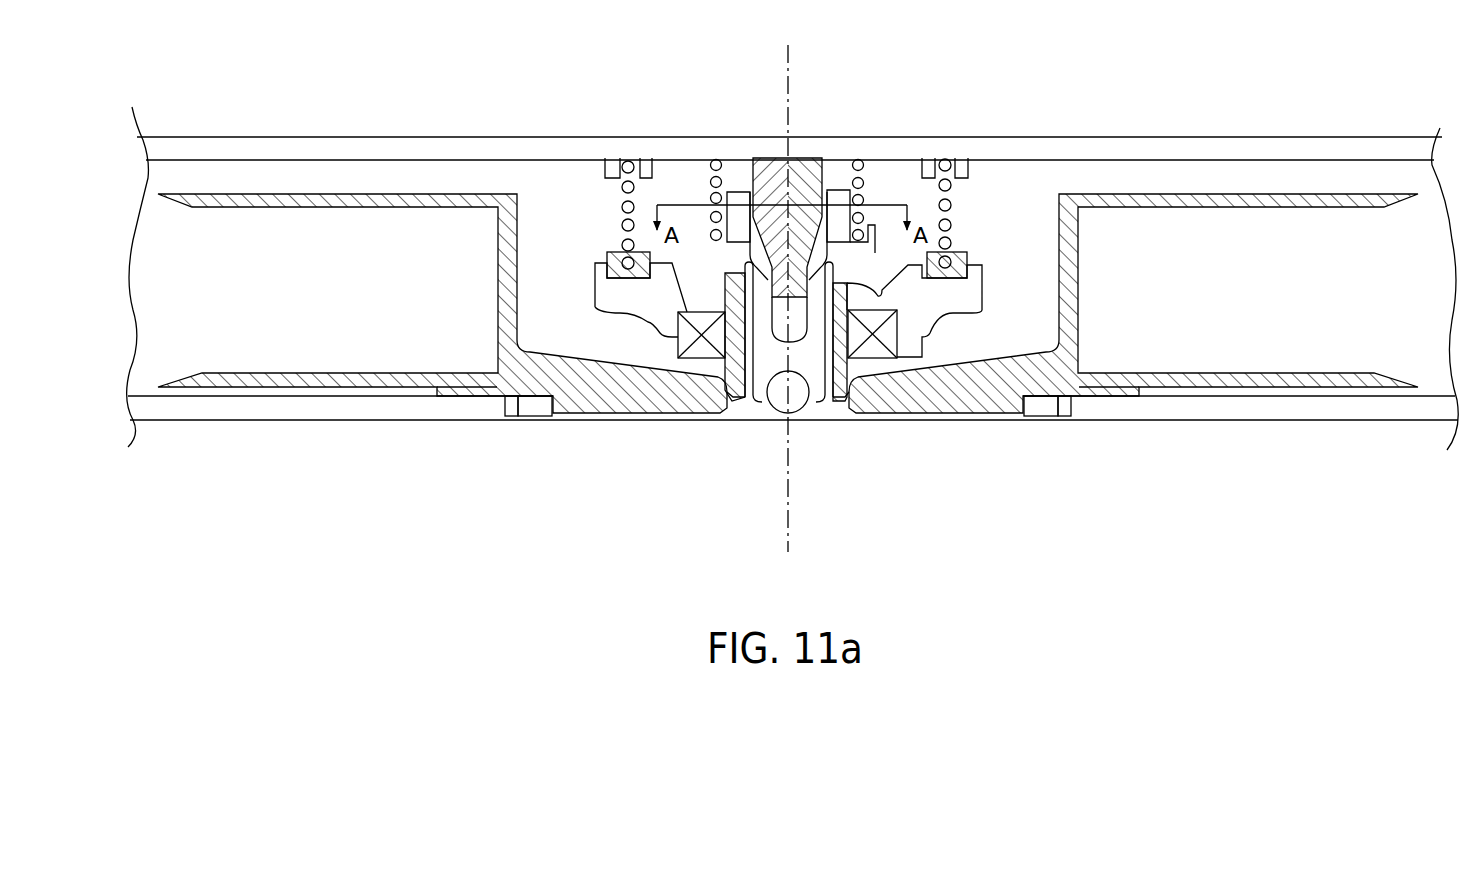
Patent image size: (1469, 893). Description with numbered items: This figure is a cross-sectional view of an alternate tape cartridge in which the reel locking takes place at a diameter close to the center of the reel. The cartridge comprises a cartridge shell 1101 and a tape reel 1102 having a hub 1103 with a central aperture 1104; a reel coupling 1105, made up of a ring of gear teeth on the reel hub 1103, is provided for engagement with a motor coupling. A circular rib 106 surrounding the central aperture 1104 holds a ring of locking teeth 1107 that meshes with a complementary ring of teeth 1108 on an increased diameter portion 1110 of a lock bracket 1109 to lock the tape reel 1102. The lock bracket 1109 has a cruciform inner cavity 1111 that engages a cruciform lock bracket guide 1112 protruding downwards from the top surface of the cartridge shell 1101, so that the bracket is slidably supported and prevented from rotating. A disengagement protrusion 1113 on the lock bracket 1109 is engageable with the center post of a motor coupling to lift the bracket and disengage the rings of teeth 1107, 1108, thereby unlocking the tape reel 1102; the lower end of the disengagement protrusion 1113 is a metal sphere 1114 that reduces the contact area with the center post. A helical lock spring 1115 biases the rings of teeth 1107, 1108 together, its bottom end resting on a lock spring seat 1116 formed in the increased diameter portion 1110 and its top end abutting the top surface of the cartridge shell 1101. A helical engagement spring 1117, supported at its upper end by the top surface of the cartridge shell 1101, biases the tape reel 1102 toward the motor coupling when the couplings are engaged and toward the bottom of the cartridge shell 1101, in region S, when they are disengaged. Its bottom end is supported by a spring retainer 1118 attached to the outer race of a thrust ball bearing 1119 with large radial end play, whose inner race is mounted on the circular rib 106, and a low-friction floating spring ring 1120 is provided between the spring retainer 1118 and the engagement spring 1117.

The cartridge shell 1101 is at (225, 140).
The tape reel 1102 is at (308, 200).
The hub 1103 is at (997, 398).
The central aperture 1104 is at (825, 403).
The reel coupling 1105 is at (1041, 408).
The circular rib 106 is at (842, 350).
The ring of locking teeth 1107 is at (722, 355).
The complementary ring of teeth 1108 is at (735, 283).
The lock bracket 1109 is at (842, 177).
The increased diameter portion 1110 is at (902, 207).
The cruciform inner cavity 1111 is at (757, 265).
The cruciform lock bracket guide 1112 is at (799, 157).
The disengagement protrusion 1113 is at (768, 352).
The metal sphere 1114 is at (783, 412).
The helical lock spring 1115 is at (707, 153).
The lock spring seat 1116 is at (873, 250).
The helical engagement spring 1117 is at (612, 195).
The spring retainer 1118 is at (608, 295).
The thrust ball bearing 1119 is at (898, 358).
The floating spring ring 1120 is at (972, 245).
The region S is at (485, 393).